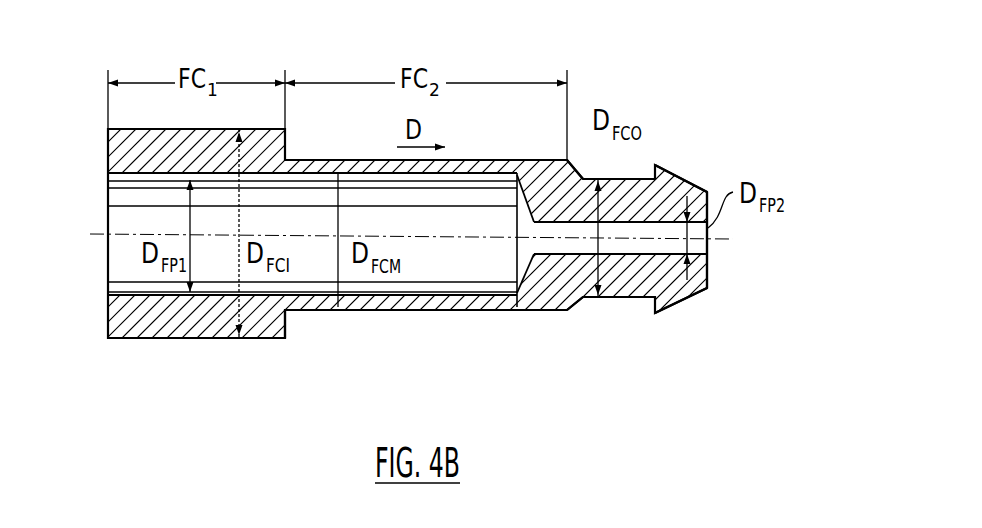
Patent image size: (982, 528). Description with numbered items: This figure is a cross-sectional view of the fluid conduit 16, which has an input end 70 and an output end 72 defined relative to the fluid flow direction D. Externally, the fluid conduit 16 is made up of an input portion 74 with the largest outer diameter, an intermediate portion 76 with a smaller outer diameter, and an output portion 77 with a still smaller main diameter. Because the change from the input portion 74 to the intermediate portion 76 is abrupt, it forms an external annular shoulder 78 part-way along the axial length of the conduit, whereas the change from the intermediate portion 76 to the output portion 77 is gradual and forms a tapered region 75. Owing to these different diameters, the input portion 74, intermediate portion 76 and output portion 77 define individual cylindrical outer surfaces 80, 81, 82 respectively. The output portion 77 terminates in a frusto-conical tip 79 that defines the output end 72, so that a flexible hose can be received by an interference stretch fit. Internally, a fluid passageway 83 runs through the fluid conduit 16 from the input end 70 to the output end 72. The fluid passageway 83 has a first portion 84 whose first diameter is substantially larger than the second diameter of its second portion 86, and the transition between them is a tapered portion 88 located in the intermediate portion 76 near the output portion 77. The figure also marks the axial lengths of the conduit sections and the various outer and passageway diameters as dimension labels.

The fluid conduit 16 is at (743, 135).
The input end 70 is at (92, 320).
The output end 72 is at (735, 286).
The input portion 74 is at (188, 330).
The tapered region 75 is at (578, 173).
The intermediate portion 76 is at (482, 313).
The output portion 77 is at (625, 281).
The external annular shoulder 78 is at (287, 322).
The frusto-conical tip 79 is at (677, 183).
The cylindrical outer surface of input portion 80 is at (162, 128).
The cylindrical outer surface of intermediate portion 81 is at (320, 159).
The cylindrical outer surface of output portion 82 is at (643, 179).
The fluid passageway 83 is at (462, 202).
The first portion of fluid passageway 84 is at (312, 253).
The second portion of fluid passageway 86 is at (542, 200).
The tapered portion 88 is at (525, 279).